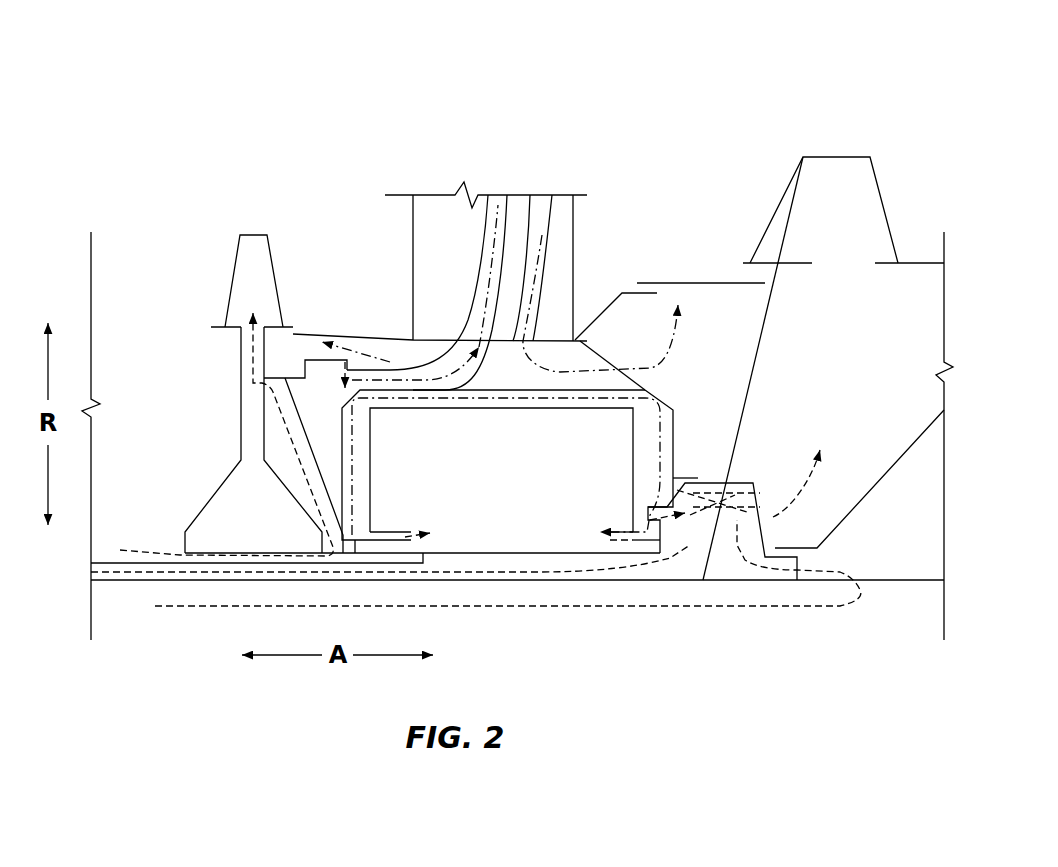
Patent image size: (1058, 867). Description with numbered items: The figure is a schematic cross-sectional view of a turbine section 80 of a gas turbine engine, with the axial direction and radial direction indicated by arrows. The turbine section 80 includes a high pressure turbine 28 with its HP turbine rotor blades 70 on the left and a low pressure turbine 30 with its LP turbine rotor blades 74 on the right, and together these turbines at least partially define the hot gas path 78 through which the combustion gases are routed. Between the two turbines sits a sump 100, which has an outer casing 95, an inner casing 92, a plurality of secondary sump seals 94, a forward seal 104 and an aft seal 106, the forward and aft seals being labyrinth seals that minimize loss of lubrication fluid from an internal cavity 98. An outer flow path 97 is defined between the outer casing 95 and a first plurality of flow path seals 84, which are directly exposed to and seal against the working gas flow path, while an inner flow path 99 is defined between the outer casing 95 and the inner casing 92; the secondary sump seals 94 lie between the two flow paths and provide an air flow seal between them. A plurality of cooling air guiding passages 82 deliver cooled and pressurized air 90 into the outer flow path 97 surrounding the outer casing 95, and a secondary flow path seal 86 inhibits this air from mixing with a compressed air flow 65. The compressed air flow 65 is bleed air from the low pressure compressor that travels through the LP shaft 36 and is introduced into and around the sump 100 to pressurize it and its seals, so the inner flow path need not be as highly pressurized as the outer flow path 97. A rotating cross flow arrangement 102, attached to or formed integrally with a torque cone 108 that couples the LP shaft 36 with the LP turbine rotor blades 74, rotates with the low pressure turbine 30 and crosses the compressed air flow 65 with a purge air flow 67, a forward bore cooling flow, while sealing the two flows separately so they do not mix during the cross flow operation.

The HP turbine 28 is at (165, 243).
The LP turbine 30 is at (920, 196).
The LP shaft 36 is at (882, 580).
The compressed air flow 65 is at (660, 407).
The purge air flow 67 is at (668, 560).
The HP turbine rotor blades 70 is at (233, 258).
The LP turbine rotor blades 74 is at (793, 183).
The hot gas path 78 is at (158, 362).
The turbine section 80 is at (590, 80).
The cooling air guiding passages 82 is at (482, 243).
The first plurality of flow path seals 84 is at (306, 305).
The secondary flow path seal 86 is at (330, 372).
The cooled and pressurized air 90 is at (392, 383).
The inner casing 92 is at (458, 408).
The secondary sump seals 94 is at (312, 420).
The outer casing 95 is at (590, 380).
The outer flow path 97 is at (618, 337).
The internal cavity 98 is at (482, 473).
The inner flow path 99 is at (400, 390).
The sump 100 is at (525, 502).
The rotating cross flow arrangement 102 is at (738, 505).
The forward seal 104 is at (393, 530).
The aft seal 106 is at (616, 530).
The torque cone 108 is at (737, 433).